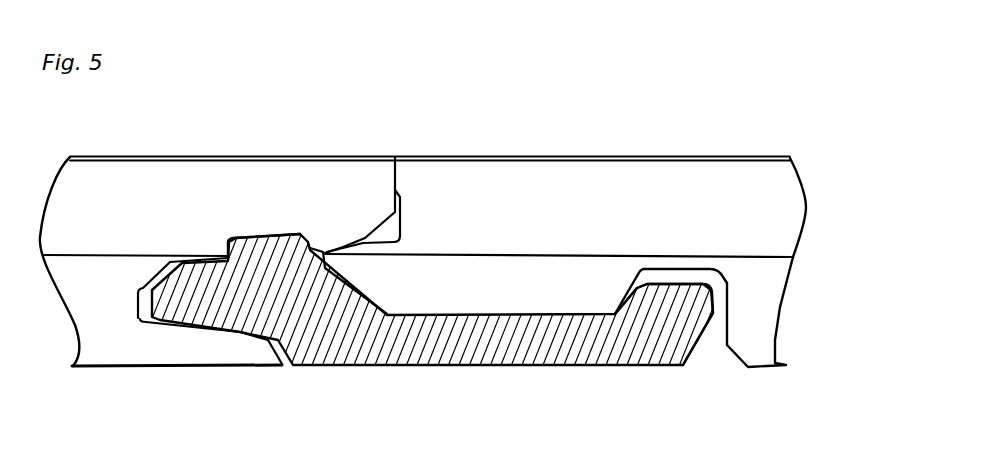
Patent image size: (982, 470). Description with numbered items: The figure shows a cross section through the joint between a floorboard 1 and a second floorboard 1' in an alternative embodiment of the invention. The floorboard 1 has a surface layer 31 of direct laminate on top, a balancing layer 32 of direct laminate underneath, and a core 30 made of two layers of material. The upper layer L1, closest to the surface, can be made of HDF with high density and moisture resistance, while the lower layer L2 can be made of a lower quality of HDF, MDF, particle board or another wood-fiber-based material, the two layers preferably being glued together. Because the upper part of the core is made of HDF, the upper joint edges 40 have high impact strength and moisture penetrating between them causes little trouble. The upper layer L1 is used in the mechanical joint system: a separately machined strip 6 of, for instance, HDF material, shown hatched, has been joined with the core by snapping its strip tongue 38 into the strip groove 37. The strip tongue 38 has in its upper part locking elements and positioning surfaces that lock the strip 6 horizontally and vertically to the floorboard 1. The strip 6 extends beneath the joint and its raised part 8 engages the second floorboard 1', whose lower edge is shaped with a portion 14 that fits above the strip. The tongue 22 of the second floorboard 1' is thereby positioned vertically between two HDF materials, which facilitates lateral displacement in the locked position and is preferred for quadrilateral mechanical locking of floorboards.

The floorboard 1 is at (157, 227).
The second floorboard 1' is at (676, 164).
The strip 6 is at (513, 353).
The raised portion of insert 8 is at (680, 320).
The hump 14 is at (716, 276).
The tongue 22 is at (372, 270).
The core 30 is at (814, 237).
The surface layer 31 is at (482, 157).
The balancing layer 32 is at (193, 367).
The strip groove 37 is at (145, 293).
The strip tongue 38 is at (226, 255).
The upper joint edge 40 is at (395, 157).
The upper layer L1 is at (128, 185).
The lower layer L2 is at (253, 353).